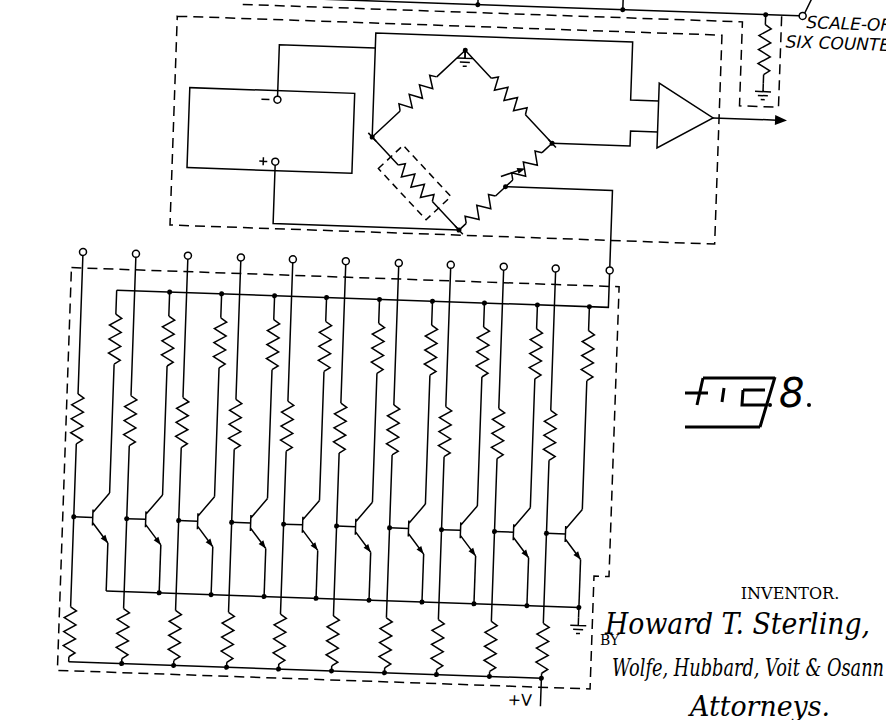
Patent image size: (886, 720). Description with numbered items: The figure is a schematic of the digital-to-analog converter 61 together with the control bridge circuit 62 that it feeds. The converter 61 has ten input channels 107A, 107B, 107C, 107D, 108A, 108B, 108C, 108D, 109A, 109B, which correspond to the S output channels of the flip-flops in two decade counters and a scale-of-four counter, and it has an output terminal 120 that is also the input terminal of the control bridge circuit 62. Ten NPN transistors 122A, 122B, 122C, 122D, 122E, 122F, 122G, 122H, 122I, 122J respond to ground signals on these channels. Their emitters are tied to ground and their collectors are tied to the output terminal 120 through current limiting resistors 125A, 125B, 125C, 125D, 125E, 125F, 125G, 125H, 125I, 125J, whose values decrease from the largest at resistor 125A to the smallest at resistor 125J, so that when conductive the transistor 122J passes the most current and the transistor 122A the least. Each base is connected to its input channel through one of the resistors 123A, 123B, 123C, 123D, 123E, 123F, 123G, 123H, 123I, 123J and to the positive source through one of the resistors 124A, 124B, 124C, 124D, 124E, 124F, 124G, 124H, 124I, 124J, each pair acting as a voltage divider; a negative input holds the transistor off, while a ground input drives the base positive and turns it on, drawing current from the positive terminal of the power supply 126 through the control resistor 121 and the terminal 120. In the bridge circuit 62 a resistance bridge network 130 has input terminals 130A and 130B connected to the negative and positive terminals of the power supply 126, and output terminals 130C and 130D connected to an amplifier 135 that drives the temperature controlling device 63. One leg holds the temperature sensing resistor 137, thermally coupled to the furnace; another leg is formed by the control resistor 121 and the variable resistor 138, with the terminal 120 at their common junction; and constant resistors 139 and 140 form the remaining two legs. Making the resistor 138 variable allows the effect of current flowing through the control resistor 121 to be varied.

The digital-to-analog converter 61 is at (631, 458).
The control bridge circuit 62 is at (719, 189).
The temperature controlling device 63 is at (833, 142).
The input channel 107A is at (84, 420).
The input channel 107B is at (137, 422).
The input channel 107C is at (190, 423).
The input channel 107D is at (243, 425).
The input channel 108A is at (293, 427).
The input channel 108B is at (346, 429).
The input channel 108C is at (400, 431).
The input channel 108D is at (452, 433).
The input channel 109A is at (504, 434).
The input channel 109B is at (556, 436).
The output terminal 120 is at (614, 252).
The control resistor 121 is at (494, 193).
The transistor 122A is at (99, 541).
The transistor 122B is at (152, 543).
The transistor 122C is at (204, 544).
The transistor 122D is at (257, 546).
The transistor 122E is at (309, 548).
The transistor 122F is at (362, 550).
The transistor 122G is at (415, 552).
The transistor 122H is at (466, 554).
The transistor 122I is at (519, 555).
The transistor 122J is at (571, 557).
The resistor 123A is at (91, 419).
The resistor 123B is at (144, 421).
The resistor 123C is at (196, 422).
The resistor 123D is at (249, 424).
The resistor 123E is at (301, 426).
The resistor 123F is at (354, 428).
The resistor 123G is at (407, 430).
The resistor 123H is at (459, 432).
The resistor 123I is at (512, 433).
The resistor 123J is at (564, 435).
The resistor 124A is at (87, 635).
The resistor 124B is at (140, 636).
The resistor 124C is at (193, 638).
The resistor 124D is at (246, 640).
The resistor 124E is at (297, 642).
The resistor 124F is at (350, 644).
The resistor 124G is at (404, 646).
The resistor 124H is at (455, 647).
The resistor 124I is at (505, 649).
The resistor 124J is at (557, 651).
The current limiting resistor 125A is at (102, 391).
The current limiting resistor 125B is at (155, 393).
The current limiting resistor 125C is at (208, 395).
The current limiting resistor 125D is at (261, 397).
The current limiting resistor 125E is at (312, 399).
The current limiting resistor 125F is at (365, 400).
The current limiting resistor 125G is at (418, 402).
The current limiting resistor 125H is at (470, 404).
The current limiting resistor 125I is at (523, 406).
The current limiting resistor 125J is at (575, 408).
The power supply 126 is at (231, 84).
The resistance bridge network 130 is at (472, 143).
The input terminal 130A is at (461, 38).
The input terminal 130B is at (461, 203).
The output terminal 130C is at (371, 126).
The output terminal 130D is at (550, 125).
The amplifier 135 is at (686, 113).
The temperature sensing resistor 137 is at (380, 186).
The variable resistor 138 is at (540, 161).
The constant resistor 139 is at (421, 74).
The constant resistor 140 is at (507, 78).